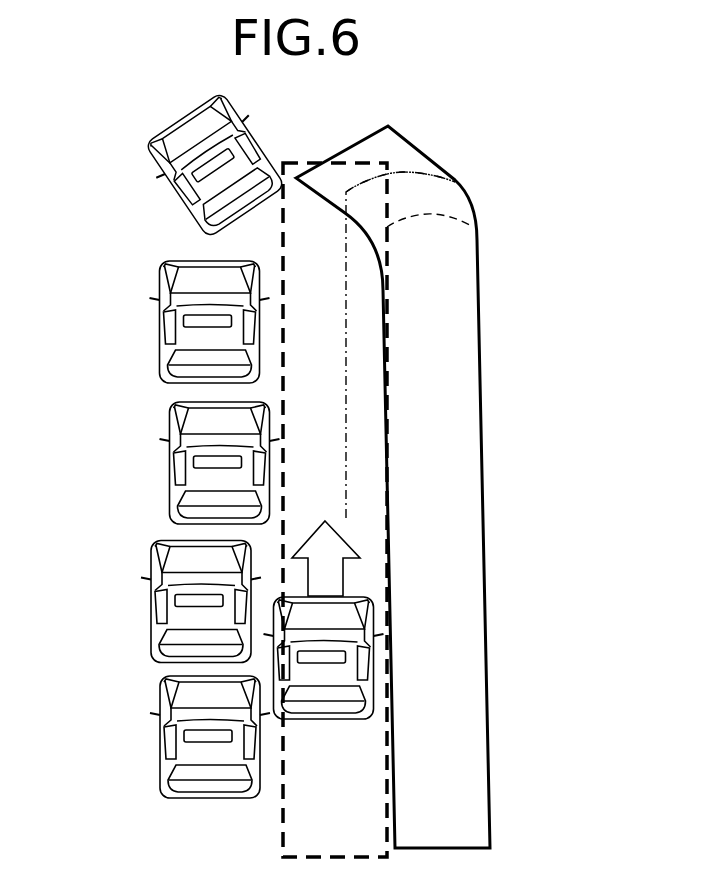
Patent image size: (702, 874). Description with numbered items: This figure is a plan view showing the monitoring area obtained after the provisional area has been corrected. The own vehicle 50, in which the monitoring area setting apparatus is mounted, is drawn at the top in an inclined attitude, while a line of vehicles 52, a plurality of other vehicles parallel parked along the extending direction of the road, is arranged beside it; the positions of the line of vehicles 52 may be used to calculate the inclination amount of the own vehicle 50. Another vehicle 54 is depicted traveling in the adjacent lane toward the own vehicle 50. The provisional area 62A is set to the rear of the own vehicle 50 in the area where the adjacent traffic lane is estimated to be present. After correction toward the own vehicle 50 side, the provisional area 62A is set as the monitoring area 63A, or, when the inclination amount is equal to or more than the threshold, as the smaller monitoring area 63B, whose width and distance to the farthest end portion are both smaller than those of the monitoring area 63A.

The own vehicle 50 is at (248, 113).
The line of vehicles 52 is at (151, 613).
The other vehicle 54 is at (372, 657).
The provisional area 62A is at (479, 333).
The monitoring area 63A is at (473, 227).
The monitoring area 63B is at (455, 182).